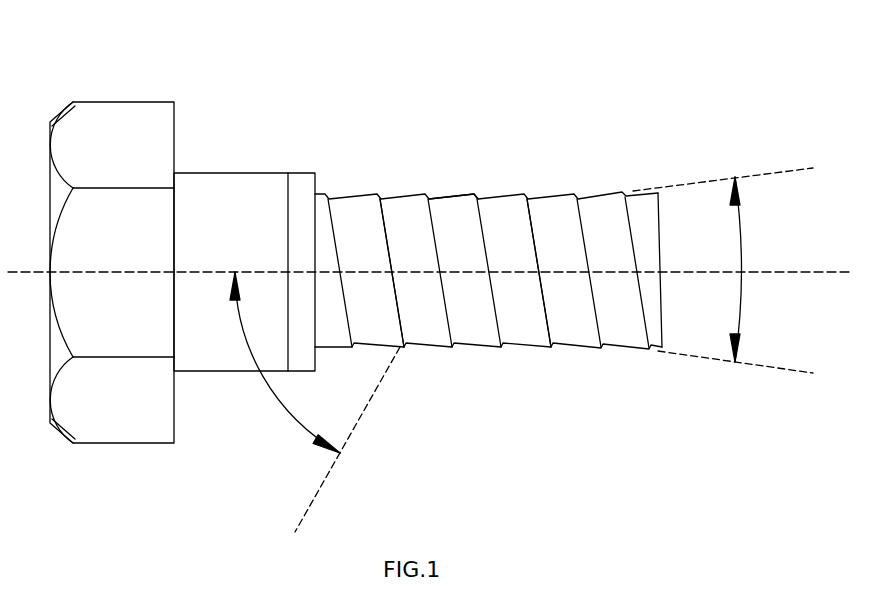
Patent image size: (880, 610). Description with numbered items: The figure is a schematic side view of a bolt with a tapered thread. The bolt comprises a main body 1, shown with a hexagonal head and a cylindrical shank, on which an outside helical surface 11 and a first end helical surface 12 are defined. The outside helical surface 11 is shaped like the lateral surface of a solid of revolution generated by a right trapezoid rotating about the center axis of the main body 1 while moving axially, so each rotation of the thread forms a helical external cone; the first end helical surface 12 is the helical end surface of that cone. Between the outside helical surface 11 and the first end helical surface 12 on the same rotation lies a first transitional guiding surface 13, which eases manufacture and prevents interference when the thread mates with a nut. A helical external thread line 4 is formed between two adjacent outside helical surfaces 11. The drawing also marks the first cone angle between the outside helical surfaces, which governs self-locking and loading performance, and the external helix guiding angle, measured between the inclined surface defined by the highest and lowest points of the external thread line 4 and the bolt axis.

The main body 1 is at (232, 213).
The external thread line 4 is at (385, 250).
The outside helical surface 11 is at (407, 235).
The first end helical surface 12 is at (533, 240).
The first transitional guiding surface 13 is at (475, 195).